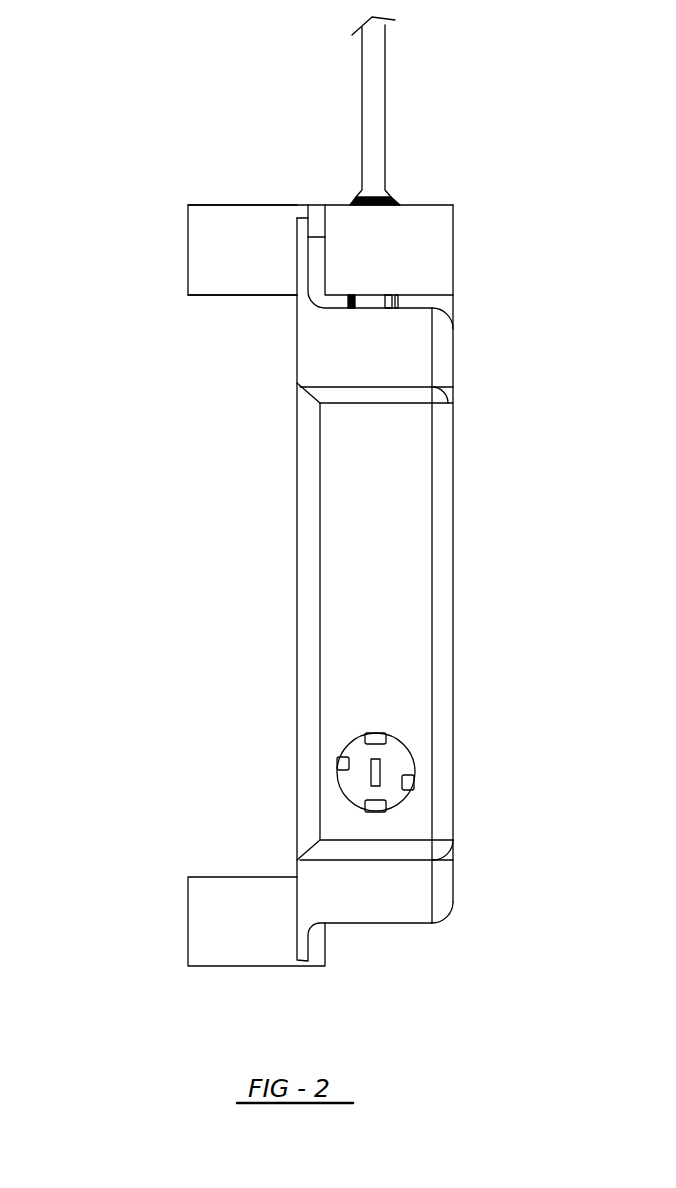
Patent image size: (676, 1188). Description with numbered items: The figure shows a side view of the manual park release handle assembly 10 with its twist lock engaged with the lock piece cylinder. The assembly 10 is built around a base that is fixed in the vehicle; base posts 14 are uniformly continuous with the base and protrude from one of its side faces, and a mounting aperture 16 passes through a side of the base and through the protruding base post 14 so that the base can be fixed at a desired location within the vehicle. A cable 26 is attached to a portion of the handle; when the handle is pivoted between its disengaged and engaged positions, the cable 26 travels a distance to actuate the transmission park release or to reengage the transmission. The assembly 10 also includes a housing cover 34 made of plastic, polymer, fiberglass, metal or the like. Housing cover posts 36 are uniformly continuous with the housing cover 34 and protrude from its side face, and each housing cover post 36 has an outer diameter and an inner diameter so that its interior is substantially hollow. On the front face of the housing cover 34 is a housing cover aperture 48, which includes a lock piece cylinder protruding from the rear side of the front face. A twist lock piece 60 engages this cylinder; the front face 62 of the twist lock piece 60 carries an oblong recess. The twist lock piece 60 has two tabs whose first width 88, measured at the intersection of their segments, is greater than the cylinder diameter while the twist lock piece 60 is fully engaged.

The manual park release handle assembly 10 is at (78, 145).
The base post 14 is at (243, 228).
The mounting aperture 16 is at (186, 250).
The cable 26 is at (396, 65).
The housing cover 34 is at (462, 510).
The housing cover post 36 is at (245, 298).
The housing cover aperture 48 is at (408, 784).
The twist lock piece 60 is at (398, 762).
The front face 62 is at (370, 777).
The first width 88 is at (407, 192).